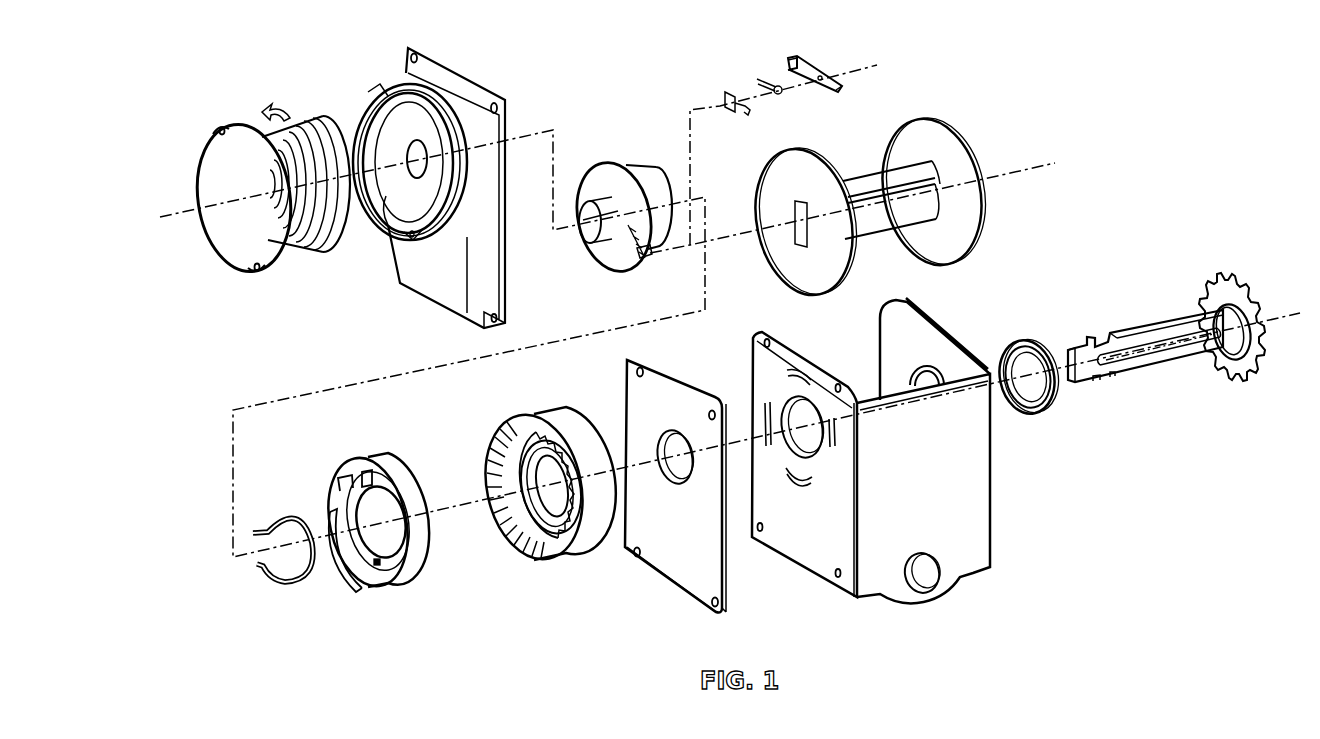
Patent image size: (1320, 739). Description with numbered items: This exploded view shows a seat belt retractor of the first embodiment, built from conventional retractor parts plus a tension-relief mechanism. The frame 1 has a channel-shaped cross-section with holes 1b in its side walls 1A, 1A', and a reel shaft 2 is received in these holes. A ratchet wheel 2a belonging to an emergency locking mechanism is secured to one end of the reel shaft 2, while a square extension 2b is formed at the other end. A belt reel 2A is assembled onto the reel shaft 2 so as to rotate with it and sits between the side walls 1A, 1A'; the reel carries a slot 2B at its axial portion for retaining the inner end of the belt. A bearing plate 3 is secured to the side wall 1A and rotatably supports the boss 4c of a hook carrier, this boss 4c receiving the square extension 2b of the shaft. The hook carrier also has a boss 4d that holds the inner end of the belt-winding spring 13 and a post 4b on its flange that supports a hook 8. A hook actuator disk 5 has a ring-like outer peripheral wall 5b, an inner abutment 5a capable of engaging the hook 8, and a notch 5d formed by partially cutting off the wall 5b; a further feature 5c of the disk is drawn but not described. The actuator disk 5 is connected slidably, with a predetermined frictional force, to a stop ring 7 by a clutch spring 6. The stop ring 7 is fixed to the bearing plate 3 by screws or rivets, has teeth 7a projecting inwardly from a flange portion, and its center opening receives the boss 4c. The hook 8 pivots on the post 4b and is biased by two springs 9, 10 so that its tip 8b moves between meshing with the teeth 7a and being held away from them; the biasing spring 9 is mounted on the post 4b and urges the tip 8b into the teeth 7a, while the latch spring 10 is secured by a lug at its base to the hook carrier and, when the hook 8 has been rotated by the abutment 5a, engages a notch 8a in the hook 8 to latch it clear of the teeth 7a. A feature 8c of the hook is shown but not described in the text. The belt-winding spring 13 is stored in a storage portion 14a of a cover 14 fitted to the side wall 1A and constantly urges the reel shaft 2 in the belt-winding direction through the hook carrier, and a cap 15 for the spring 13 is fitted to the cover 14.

The frame 1 is at (873, 464).
The side wall 1A is at (848, 450).
The side wall 1A' is at (945, 449).
The hole 1b is at (786, 378).
The reel shaft 2 is at (1166, 331).
The ratchet wheel 2a is at (1233, 280).
The square extension 2b is at (1080, 333).
The belt reel 2A is at (972, 217).
The slot 2B is at (893, 206).
The bearing plate 3 is at (670, 586).
The post 4b is at (647, 258).
The boss 4c is at (655, 190).
The boss 4d is at (603, 200).
The hook actuator disk 5 is at (366, 535).
The inner abutment 5a is at (377, 478).
The outer peripheral wall 5b is at (357, 562).
The stop of cam ring 5c is at (378, 567).
The notch 5d is at (337, 490).
The clutch spring 6 is at (302, 583).
The stop ring 7 is at (544, 508).
The teeth 7a is at (512, 526).
The hook 8 is at (818, 62).
The notch 8a is at (822, 86).
The tip 8b is at (793, 58).
The tip of lever 8c is at (840, 90).
The biasing spring 9 is at (770, 78).
The latch spring 10 is at (737, 115).
The belt-winding spring 13 is at (317, 130).
The cover 14 is at (453, 92).
The storage portion 14a is at (395, 213).
The cap 15 is at (214, 143).